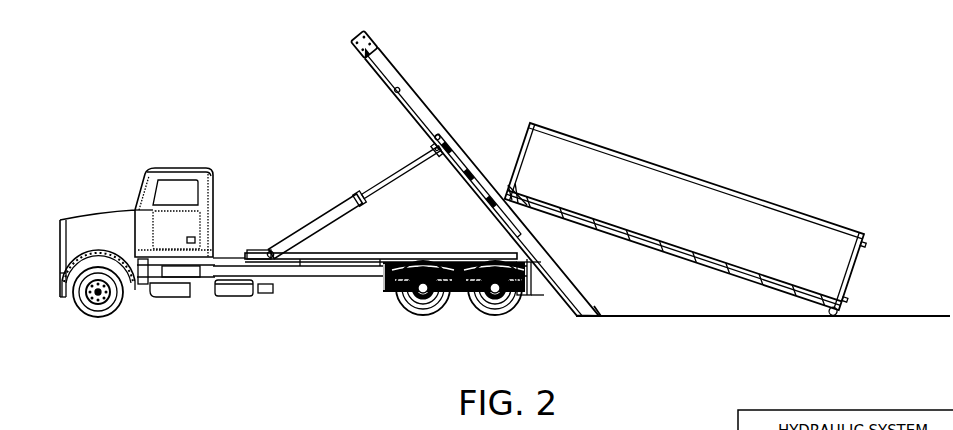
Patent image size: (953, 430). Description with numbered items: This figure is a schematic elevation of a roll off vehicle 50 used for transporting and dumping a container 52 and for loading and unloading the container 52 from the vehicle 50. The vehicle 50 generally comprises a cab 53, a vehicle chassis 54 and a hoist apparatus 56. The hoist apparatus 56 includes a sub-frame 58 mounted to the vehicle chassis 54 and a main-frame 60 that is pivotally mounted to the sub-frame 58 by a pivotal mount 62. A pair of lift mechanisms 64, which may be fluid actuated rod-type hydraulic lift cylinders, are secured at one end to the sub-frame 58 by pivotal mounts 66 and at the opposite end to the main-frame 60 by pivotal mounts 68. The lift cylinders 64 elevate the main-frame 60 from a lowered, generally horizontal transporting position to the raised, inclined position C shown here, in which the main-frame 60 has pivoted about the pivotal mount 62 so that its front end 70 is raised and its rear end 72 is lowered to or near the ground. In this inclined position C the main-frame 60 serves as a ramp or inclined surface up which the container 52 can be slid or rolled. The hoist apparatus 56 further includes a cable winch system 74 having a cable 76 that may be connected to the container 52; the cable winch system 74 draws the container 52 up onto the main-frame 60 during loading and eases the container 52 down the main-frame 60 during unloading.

The vehicle 50 is at (168, 94).
The container 52 is at (661, 190).
The cab 53 is at (137, 163).
The vehicle chassis 54 is at (344, 278).
The hoist apparatus 56 is at (430, 62).
The sub-frame 58 is at (322, 254).
The main-frame 60 is at (378, 72).
The pivotal mount 62 is at (541, 279).
The lift mechanisms 64 is at (345, 207).
The pivotal mounts 66 is at (268, 254).
The pivotal mounts 68 is at (438, 147).
The front end 70 is at (315, 51).
The rear end 72 is at (588, 324).
The cable winch system 74 is at (383, 37).
The cable 76 is at (424, 99).
The raised, inclined position C is at (527, 94).